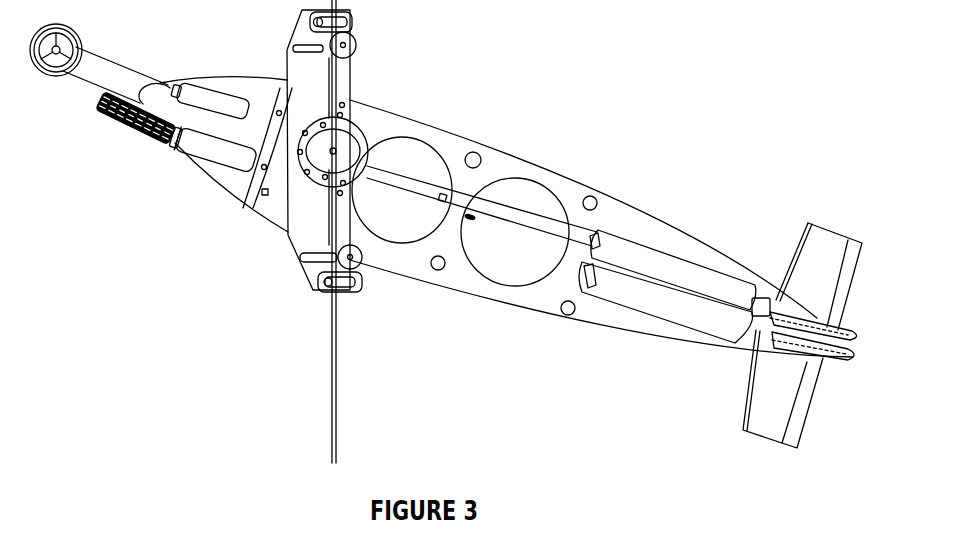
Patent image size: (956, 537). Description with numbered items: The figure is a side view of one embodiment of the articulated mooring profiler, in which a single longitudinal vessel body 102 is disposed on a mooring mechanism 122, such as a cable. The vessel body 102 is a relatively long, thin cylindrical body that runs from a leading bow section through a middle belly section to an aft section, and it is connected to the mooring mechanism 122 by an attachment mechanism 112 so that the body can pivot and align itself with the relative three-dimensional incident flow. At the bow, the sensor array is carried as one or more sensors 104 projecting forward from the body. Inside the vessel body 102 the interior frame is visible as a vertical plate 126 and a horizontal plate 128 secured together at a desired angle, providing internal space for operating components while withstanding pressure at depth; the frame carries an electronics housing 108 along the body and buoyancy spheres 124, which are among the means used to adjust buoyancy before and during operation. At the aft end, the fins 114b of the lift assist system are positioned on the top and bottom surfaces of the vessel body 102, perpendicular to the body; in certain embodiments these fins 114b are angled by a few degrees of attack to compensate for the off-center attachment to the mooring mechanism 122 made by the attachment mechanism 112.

The longitudinal vessel body 102 is at (518, 145).
The sensor 104 is at (120, 138).
The electronics housing 108 is at (695, 320).
The attachment mechanism 112 is at (285, 238).
The fin set 114b is at (658, 446).
The mooring mechanism 122 is at (331, 333).
The buoyancy sphere 124 is at (488, 283).
The vertical plate 126 is at (647, 220).
The horizontal plate 128 is at (550, 315).